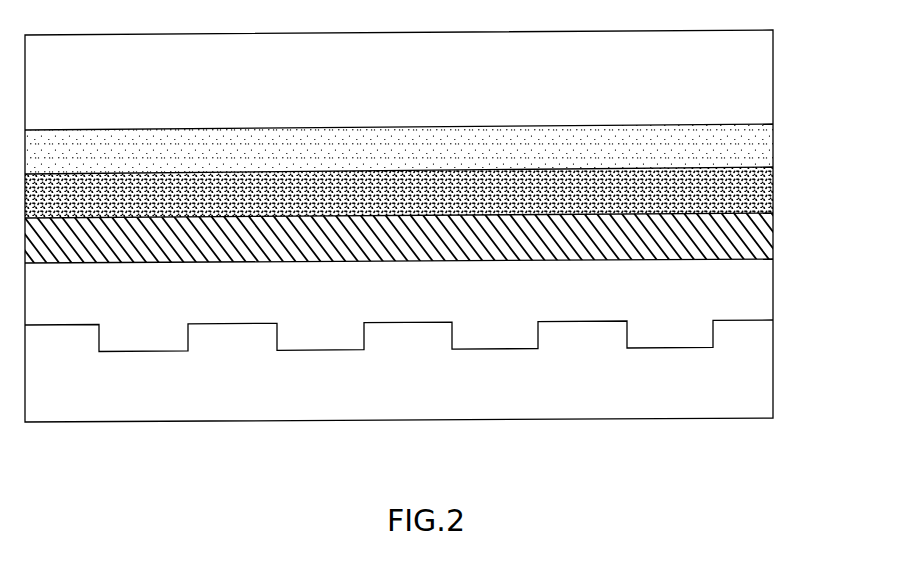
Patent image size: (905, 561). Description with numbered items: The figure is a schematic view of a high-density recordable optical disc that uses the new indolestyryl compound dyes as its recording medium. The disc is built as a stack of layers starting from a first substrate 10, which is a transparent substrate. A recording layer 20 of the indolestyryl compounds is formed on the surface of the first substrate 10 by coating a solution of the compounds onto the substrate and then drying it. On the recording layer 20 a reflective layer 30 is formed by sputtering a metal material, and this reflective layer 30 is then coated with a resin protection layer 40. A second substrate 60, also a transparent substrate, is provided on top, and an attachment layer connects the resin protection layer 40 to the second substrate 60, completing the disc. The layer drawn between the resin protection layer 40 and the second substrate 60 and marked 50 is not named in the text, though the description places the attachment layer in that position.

The first substrate 10 is at (453, 346).
The recording layer 20 is at (453, 275).
The reflective layer 30 is at (441, 237).
The resin protection layer 40 is at (453, 192).
The fourth layer 50 is at (453, 149).
The second substrate 60 is at (757, 90).